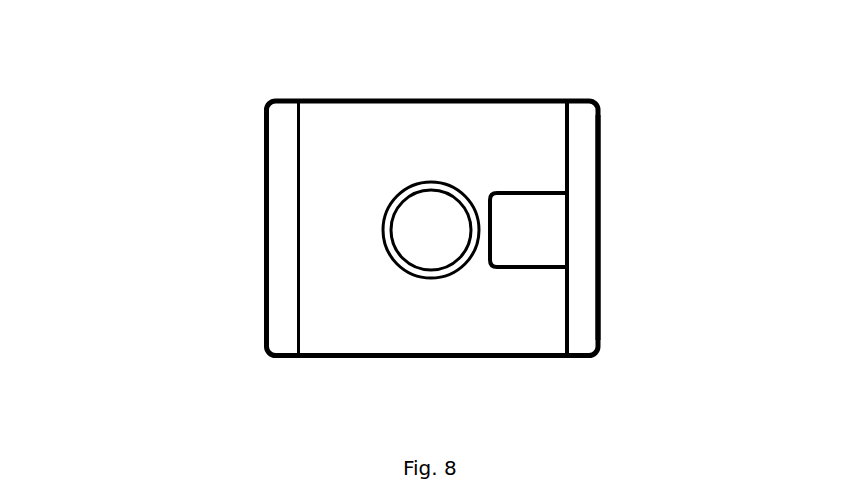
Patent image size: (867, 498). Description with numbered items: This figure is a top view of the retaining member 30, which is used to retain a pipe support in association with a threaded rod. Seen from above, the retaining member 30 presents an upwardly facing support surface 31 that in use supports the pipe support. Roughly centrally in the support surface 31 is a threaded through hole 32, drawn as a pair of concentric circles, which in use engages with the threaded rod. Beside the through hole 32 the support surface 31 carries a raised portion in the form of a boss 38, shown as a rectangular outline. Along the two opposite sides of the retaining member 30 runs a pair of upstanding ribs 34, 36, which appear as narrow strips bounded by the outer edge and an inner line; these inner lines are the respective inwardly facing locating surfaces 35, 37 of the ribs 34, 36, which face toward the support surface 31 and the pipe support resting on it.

The retaining member 30 is at (638, 186).
The upwardly facing support surface 31 is at (388, 153).
The threaded through hole 32 is at (403, 223).
The upstanding rib 34 is at (264, 116).
The inwardly facing locating surface 35 is at (300, 148).
The upstanding rib 36 is at (590, 173).
The inwardly facing locating surface 37 is at (567, 145).
The boss 38 is at (536, 258).